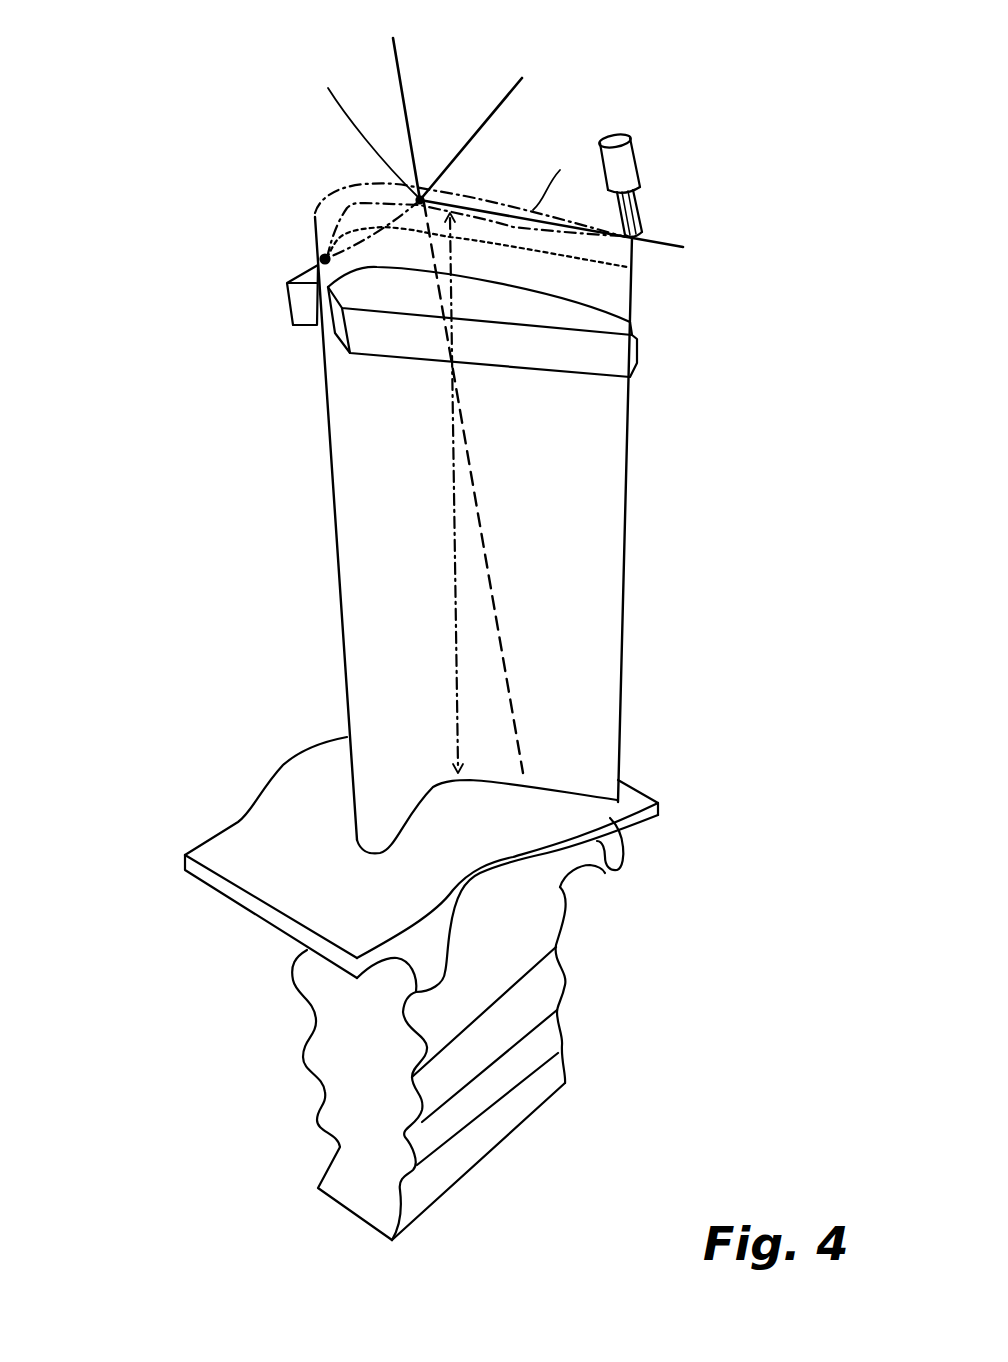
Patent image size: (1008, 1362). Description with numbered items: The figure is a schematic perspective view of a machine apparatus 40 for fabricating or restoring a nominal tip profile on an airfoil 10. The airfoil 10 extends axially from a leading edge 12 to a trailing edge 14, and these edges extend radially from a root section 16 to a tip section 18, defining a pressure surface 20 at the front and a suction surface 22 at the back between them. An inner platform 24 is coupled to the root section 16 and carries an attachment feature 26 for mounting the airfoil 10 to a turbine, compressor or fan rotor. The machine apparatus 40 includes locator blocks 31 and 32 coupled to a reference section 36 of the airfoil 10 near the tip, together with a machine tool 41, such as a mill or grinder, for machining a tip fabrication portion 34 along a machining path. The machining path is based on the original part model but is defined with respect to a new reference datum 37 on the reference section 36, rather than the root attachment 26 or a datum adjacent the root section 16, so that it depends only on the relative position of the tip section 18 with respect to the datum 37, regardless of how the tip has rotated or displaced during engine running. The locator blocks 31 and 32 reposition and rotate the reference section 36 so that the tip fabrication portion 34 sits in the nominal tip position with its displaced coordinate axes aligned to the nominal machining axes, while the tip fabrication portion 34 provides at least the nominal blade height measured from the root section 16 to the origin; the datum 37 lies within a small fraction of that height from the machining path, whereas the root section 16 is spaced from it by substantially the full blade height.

The machine apparatus 40 is at (128, 126).
The airfoil 10 is at (558, 607).
The leading edge 12 is at (347, 537).
The trailing edge 14 is at (633, 427).
The root section 16 is at (575, 785).
The tip section 18 is at (337, 197).
The pressure surface 20 is at (385, 667).
The suction surface 22 is at (320, 620).
The inner platform 24 is at (275, 845).
The attachment feature 26 is at (488, 1127).
The locator block 31 is at (508, 360).
The locator block 32 is at (302, 305).
The tip fabrication portion 34 is at (323, 242).
The reference section 36 is at (583, 284).
The new reference datum 37 is at (320, 260).
The machine tool 41 is at (627, 177).